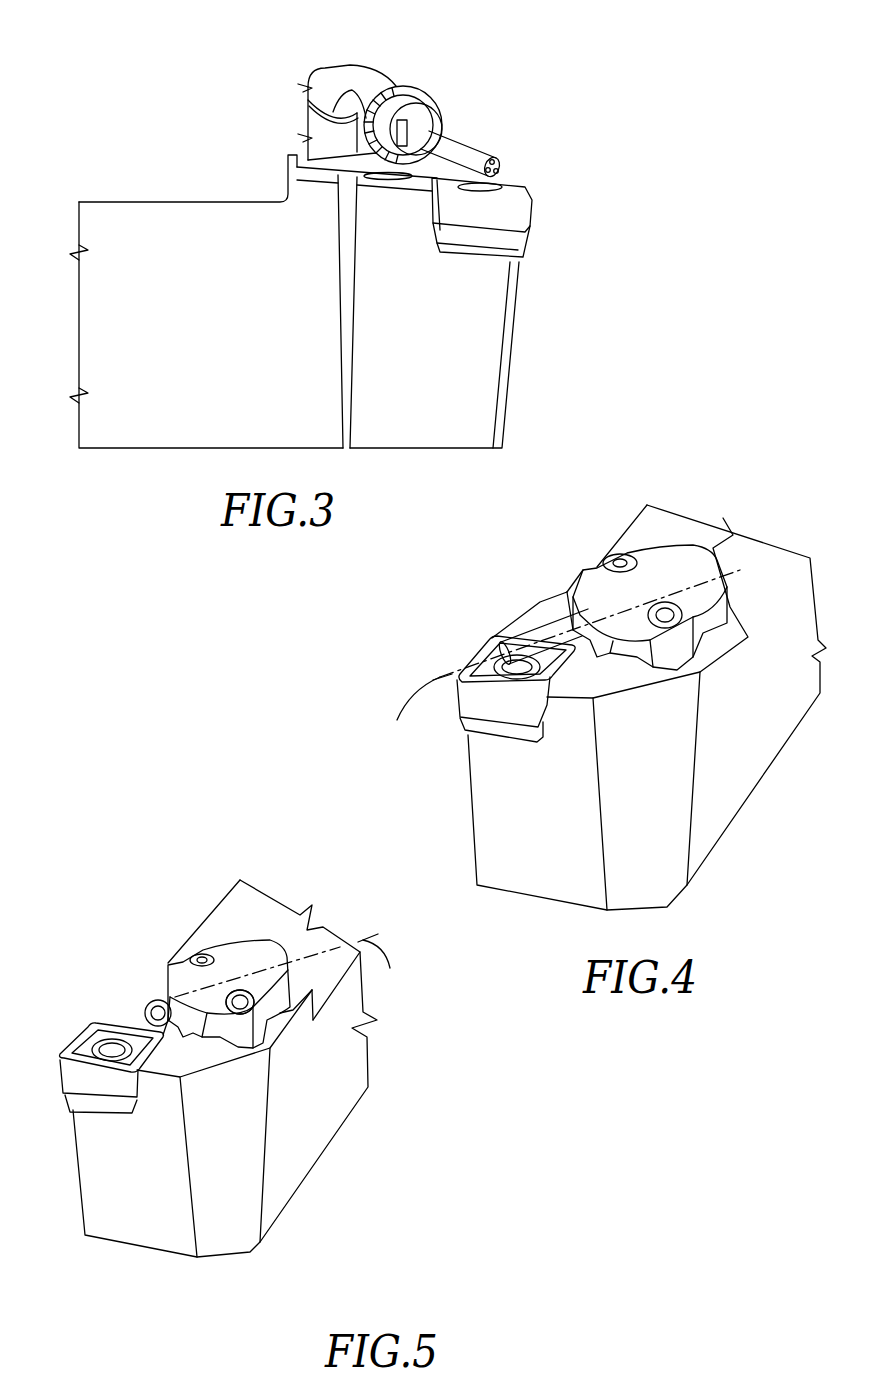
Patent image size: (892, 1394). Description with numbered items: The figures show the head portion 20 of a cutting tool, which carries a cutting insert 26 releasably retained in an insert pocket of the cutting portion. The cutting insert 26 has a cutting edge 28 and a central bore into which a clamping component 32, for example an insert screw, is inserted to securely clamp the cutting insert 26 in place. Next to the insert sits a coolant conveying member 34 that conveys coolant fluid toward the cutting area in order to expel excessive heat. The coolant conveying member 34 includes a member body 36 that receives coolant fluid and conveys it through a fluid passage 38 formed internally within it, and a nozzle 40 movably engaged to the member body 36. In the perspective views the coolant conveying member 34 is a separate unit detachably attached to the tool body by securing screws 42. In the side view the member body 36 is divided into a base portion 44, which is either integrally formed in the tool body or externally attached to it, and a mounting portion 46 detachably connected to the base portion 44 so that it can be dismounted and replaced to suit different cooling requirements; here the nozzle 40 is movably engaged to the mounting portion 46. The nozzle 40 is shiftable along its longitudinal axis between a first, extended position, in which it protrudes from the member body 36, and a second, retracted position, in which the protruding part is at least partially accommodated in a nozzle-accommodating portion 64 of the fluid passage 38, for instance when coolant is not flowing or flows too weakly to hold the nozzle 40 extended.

In FIG. 3, the head portion 20 is at (605, 150).
In FIG. 4, the head portion 20 is at (770, 838).
In FIG. 5, the head portion 20 is at (385, 1101).
In FIG. 3, the cutting insert 26 is at (513, 217).
In FIG. 5, the cutting insert 26 is at (91, 1030).
In FIG. 4, the cutting edge 28 is at (465, 675).
In FIG. 5, the clamping component 32 is at (110, 1045).
In FIG. 3, the coolant conveying member 34 is at (407, 89).
In FIG. 4, the coolant conveying member 34 is at (626, 545).
In FIG. 3, the member body 36 is at (407, 89).
In FIG. 4, the member body 36 is at (626, 561).
In FIG. 5, the member body 36 is at (210, 944).
In FIG. 4, the fluid passage 38 is at (678, 585).
In FIG. 5, the fluid passage 38 is at (240, 1002).
In FIG. 3, the nozzle 40 is at (478, 142).
In FIG. 4, the nozzle 40 is at (548, 632).
In FIG. 5, the nozzle 40 is at (160, 998).
In FIG. 4, the securing screw 42 is at (620, 560).
In FIG. 5, the securing screw 42 is at (202, 960).
In FIG. 3, the base portion 44 is at (330, 77).
In FIG. 3, the mounting portion 46 is at (423, 108).
In FIG. 5, the nozzle-accommodating portion 64 is at (247, 983).